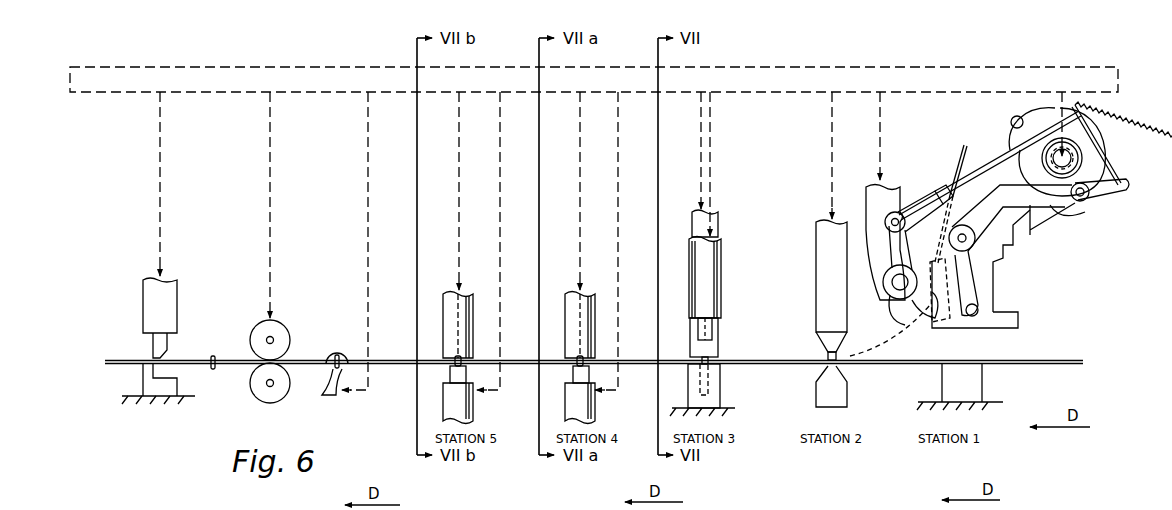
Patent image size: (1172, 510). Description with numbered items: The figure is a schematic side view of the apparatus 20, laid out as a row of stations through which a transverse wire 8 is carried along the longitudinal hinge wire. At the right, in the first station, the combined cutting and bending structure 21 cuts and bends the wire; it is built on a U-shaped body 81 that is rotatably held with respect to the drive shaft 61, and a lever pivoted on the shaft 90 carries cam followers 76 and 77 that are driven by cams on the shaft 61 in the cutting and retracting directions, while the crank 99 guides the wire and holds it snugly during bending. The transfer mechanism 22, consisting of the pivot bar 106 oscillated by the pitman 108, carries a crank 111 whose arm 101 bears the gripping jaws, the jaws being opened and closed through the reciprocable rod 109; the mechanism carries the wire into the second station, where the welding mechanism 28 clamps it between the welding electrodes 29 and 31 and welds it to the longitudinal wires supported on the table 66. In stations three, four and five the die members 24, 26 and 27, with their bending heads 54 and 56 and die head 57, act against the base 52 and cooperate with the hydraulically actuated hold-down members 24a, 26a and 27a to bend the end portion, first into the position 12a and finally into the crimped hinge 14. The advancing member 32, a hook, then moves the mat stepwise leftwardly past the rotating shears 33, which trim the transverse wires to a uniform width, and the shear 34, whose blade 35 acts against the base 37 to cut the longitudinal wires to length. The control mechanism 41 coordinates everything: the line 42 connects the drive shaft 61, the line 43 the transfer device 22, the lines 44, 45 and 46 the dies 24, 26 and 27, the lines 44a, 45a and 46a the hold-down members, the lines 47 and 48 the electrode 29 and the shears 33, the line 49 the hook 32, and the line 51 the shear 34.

The apparatus 20 is at (130, 193).
The line operating the shear 51 is at (160, 175).
The line operating the trimming shears 48 is at (270, 207).
The line operating the hook 49 is at (368, 235).
The shear 34 is at (141, 330).
The cutoff blade 35 is at (153, 348).
The base 37 is at (148, 386).
The rotating shears 33 is at (250, 330).
The advancing member 32 is at (343, 356).
The line connecting hold-down member 27a 46a is at (457, 188).
The line connecting bending die 27 46 is at (500, 173).
The line connecting hold-down member 26a 45a is at (578, 207).
The line connecting bending die 26 45 is at (618, 192).
The hold-down member 27a is at (452, 303).
The hinge 14 is at (455, 355).
The die head 57 is at (453, 372).
The die member 27 is at (452, 405).
The hold-down member 26a is at (576, 303).
The bending head 56 is at (577, 379).
The die member 26 is at (574, 402).
The line connecting bending die 24 44 is at (700, 143).
The line connecting hold-down member 24a 44a is at (710, 137).
The die member 24 is at (722, 292).
The hold-down member 24a is at (692, 340).
The bending head 54 is at (712, 331).
The base 52 is at (722, 386).
The bent position of end portion 12a is at (700, 381).
The table 66 is at (718, 411).
The line operating the welding electrode 47 is at (830, 203).
The welding mechanism 28 is at (812, 232).
The welding electrode 29 is at (816, 298).
The transverse wire 8 is at (828, 357).
The welding electrode 31 is at (831, 390).
The line connecting transfer device 43 is at (880, 128).
The line connecting drive shaft 42 is at (1062, 98).
The control mechanism 41 is at (1012, 66).
The combined cutting and bending structure 21 is at (1005, 227).
The pivot bar 106 is at (880, 195).
The transfer mechanism 22 is at (870, 266).
The crank 111 is at (900, 270).
The arm 101 is at (918, 316).
The pitman 108 is at (948, 180).
The reciprocable rod 109 is at (958, 163).
The crank 99 is at (982, 216).
The cam follower 76 is at (1012, 119).
The drive shaft 61 is at (1085, 152).
The cam follower 77 is at (1084, 200).
The shaft 90 is at (994, 272).
The U-shaped body 81 is at (1020, 322).